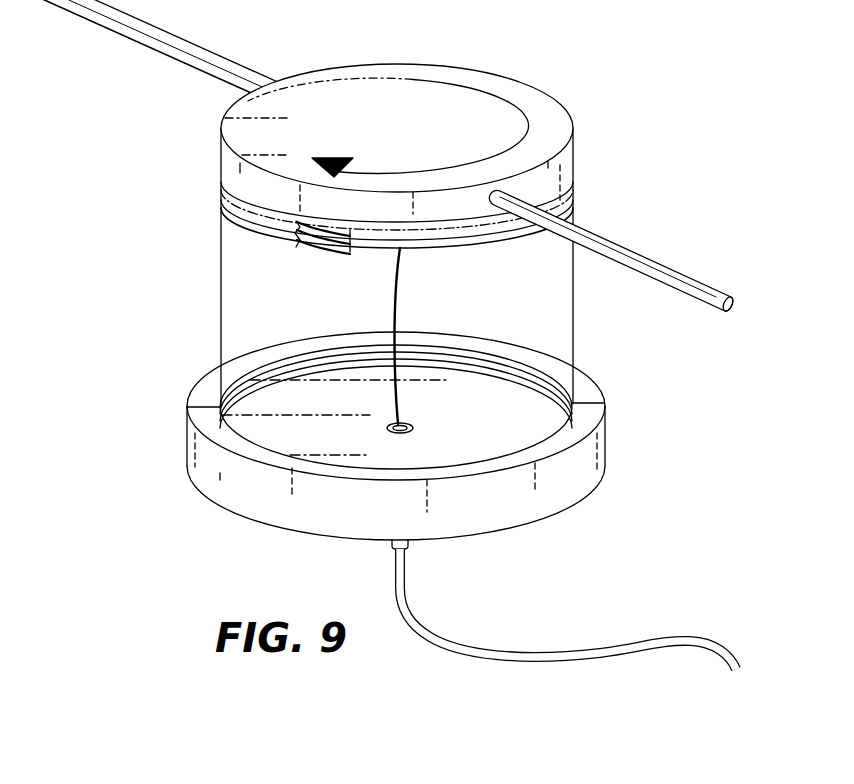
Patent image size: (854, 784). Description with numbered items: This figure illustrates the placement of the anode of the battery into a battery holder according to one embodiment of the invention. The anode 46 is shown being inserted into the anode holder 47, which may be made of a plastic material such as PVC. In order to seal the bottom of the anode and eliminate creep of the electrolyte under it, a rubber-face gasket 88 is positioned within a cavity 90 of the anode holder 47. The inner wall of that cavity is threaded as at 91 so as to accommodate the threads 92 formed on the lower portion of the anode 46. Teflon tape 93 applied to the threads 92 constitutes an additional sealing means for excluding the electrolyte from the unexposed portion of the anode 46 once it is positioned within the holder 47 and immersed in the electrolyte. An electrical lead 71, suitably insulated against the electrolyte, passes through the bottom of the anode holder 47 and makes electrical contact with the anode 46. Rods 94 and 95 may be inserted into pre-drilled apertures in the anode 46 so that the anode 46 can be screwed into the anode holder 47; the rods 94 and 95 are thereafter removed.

The anode 46 is at (490, 76).
The anode holder 47 is at (604, 436).
The electrical lead 71 is at (424, 622).
The rubber-face gasket 88 is at (523, 397).
The cavity 90 is at (450, 390).
The threaded inner wall 91 is at (294, 363).
The threads 92 is at (312, 239).
The Teflon tape 93 is at (267, 233).
The rod 94 is at (191, 56).
The rod 95 is at (646, 256).